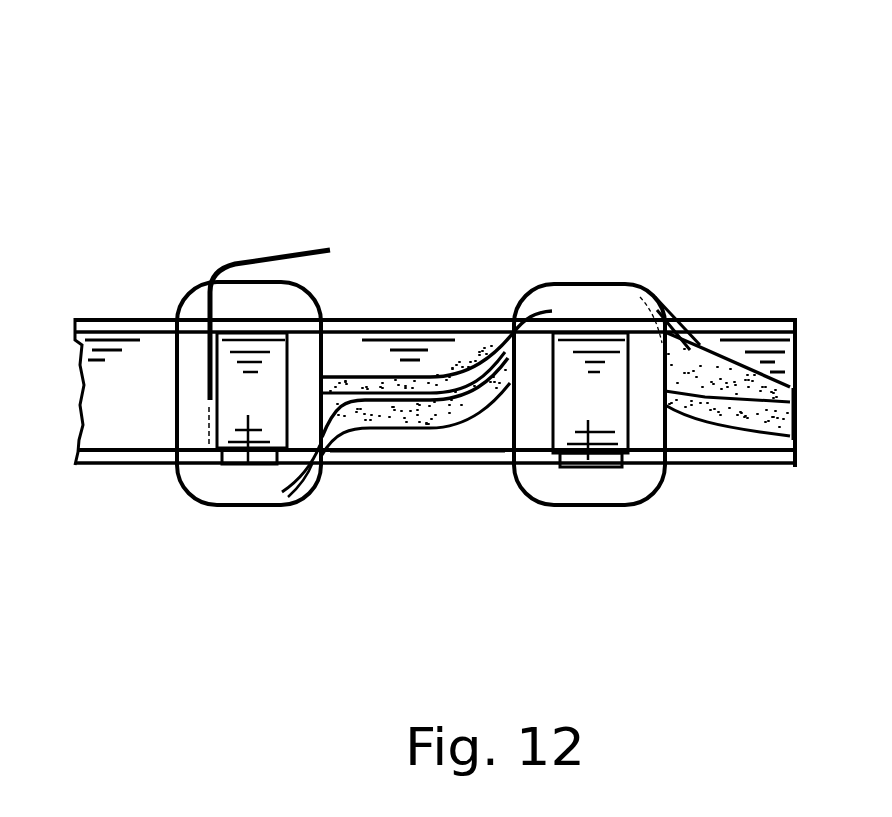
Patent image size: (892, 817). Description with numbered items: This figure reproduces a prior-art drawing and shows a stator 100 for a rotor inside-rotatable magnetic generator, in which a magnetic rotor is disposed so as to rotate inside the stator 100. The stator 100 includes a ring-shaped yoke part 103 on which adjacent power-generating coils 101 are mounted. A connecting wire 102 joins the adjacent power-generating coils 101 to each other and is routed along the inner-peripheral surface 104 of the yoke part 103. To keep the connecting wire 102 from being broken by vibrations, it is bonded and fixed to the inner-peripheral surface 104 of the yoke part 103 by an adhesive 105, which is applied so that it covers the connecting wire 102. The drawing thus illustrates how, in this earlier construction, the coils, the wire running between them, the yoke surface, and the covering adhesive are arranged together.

The stator 100 is at (692, 98).
The power-generating coils 101 is at (233, 482).
The connecting wire 102 is at (370, 380).
The ring-shaped yoke part 103 is at (150, 363).
The inner-peripheral surface 104 is at (370, 440).
The adhesive 105 is at (462, 410).